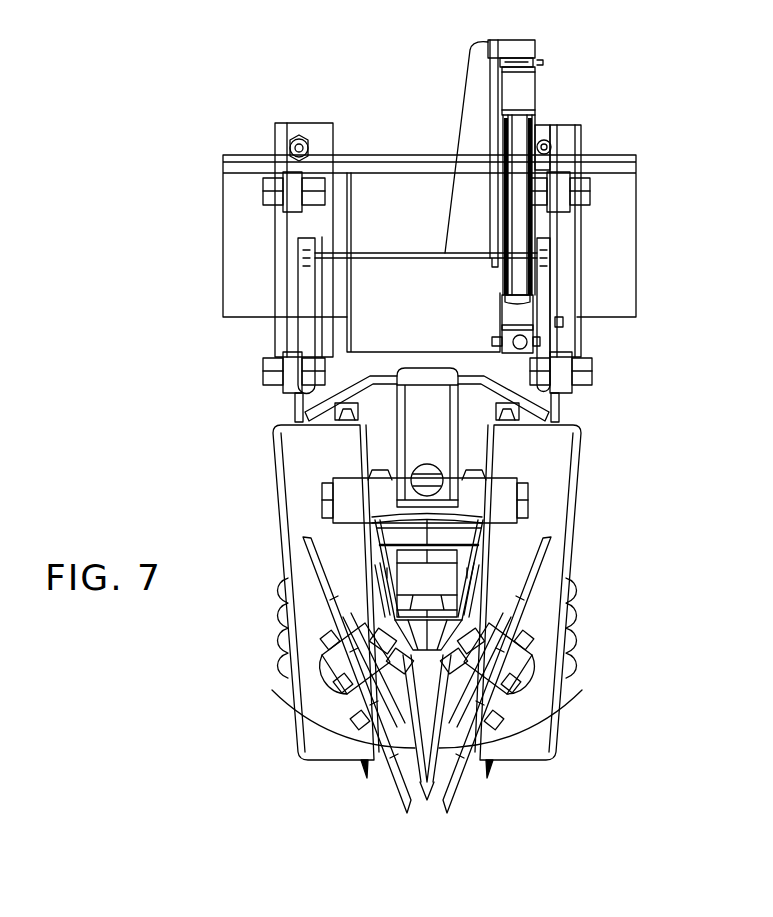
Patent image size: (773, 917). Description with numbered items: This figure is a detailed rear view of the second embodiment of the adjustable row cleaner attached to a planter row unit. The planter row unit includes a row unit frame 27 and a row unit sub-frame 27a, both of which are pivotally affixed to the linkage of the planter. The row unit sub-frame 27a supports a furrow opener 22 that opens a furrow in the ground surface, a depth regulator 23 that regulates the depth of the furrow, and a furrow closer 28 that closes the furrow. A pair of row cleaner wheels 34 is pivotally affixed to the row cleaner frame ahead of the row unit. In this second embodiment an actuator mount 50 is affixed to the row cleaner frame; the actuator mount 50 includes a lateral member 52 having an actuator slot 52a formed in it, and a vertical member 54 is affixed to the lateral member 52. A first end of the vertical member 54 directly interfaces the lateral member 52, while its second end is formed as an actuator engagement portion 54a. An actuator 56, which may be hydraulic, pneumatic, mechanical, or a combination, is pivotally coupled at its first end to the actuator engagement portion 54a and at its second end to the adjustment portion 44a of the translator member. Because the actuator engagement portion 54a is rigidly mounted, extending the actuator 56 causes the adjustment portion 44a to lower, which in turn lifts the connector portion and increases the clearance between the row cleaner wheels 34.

The actuator mount 50 is at (424, 129).
The vertical member 54 is at (468, 128).
The actuator engagement portion 54a is at (522, 43).
The actuator 56 is at (520, 132).
The row unit frame 27 is at (308, 302).
The lateral member 52 is at (390, 258).
The actuator slot 52a is at (493, 262).
The adjustment portion 44a is at (541, 350).
The row unit sub-frame 27a is at (423, 440).
The furrow opener 22 is at (378, 735).
The depth regulator 23 is at (323, 729).
The row cleaner wheels 34 is at (353, 768).
The furrow closer 28 is at (425, 805).